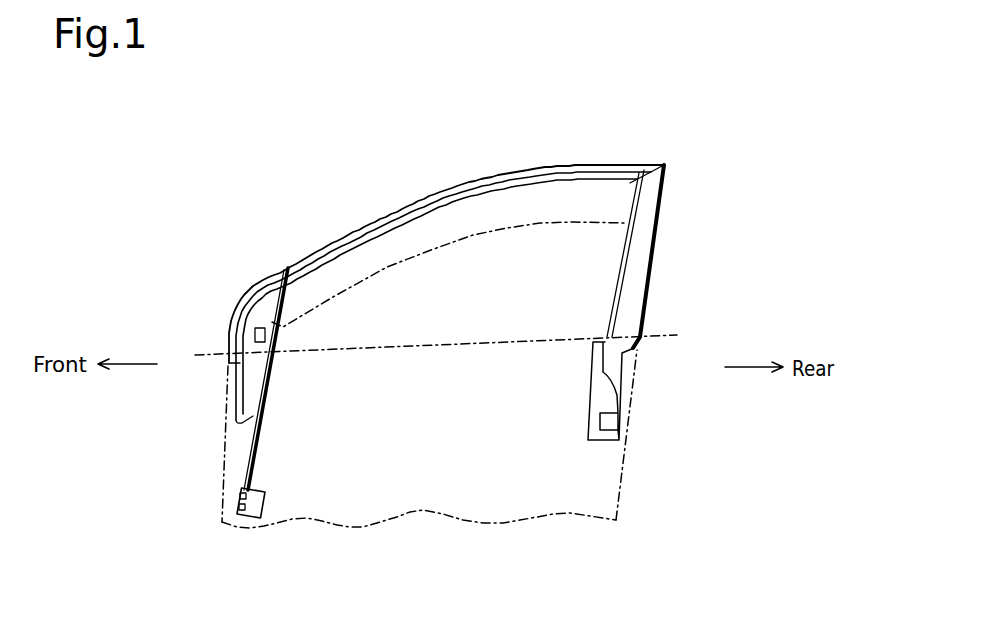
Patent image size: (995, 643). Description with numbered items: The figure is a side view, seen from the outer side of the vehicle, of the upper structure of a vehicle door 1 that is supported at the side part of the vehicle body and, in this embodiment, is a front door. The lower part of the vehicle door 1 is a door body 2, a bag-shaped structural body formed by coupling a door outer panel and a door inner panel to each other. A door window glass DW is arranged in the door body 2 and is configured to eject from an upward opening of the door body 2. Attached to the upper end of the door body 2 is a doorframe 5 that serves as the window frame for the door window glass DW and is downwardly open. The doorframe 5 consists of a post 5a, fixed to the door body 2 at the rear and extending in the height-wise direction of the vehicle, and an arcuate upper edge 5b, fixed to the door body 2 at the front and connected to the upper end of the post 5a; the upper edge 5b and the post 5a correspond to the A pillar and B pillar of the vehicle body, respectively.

The vehicle door 1 is at (228, 397).
The door body 2 is at (606, 230).
The doorframe 5 is at (697, 111).
The post 5a is at (662, 186).
The upper edge 5b is at (608, 164).
The door window glass DW is at (432, 250).